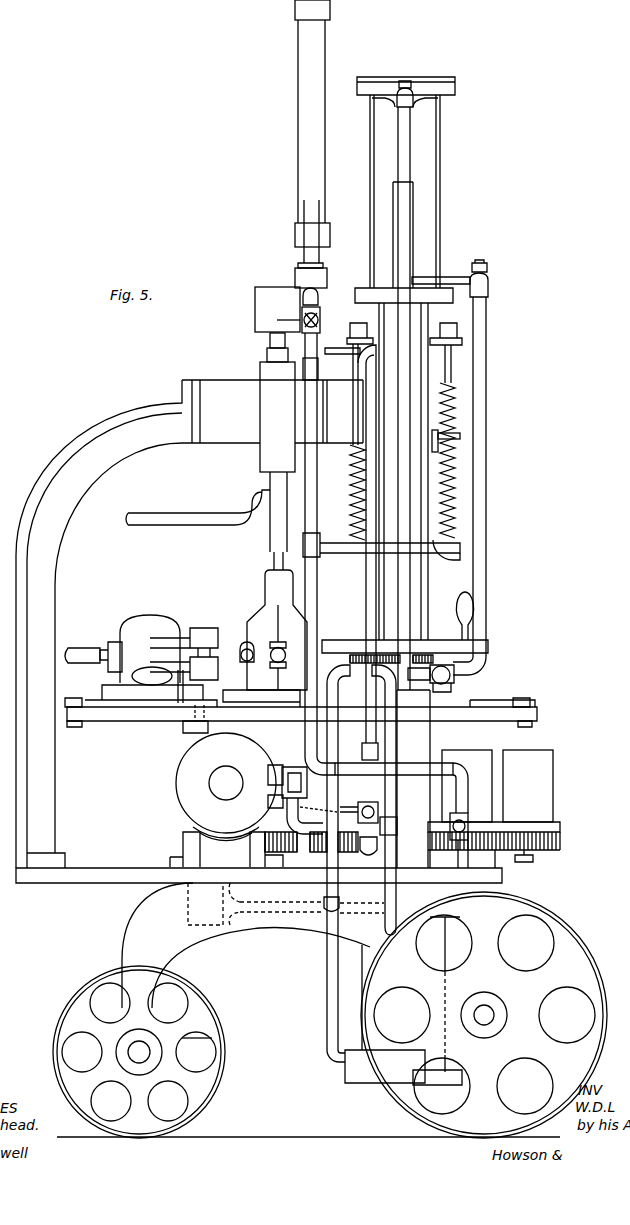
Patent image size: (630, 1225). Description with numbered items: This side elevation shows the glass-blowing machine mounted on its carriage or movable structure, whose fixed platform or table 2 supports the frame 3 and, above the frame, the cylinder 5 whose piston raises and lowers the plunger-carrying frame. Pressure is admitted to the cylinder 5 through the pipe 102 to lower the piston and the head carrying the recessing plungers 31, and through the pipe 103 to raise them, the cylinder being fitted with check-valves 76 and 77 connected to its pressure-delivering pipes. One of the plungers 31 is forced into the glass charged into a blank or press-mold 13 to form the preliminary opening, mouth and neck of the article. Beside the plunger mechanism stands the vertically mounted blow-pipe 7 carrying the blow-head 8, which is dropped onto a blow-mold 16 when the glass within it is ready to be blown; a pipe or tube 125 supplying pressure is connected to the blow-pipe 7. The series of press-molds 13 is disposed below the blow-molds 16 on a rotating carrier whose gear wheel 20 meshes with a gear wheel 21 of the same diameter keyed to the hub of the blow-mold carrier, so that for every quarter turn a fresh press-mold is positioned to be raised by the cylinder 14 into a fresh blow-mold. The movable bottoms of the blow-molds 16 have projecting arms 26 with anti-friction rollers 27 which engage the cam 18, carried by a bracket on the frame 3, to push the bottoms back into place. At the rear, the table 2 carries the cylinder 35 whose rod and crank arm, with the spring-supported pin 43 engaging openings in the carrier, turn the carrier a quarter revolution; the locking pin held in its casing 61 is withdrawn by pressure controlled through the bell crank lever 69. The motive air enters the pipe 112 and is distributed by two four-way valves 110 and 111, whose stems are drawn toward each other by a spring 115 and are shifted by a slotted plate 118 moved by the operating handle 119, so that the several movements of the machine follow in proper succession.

The fixed platform or table 2 is at (133, 878).
The frame 3 is at (189, 624).
The cylinder 5 is at (434, 213).
The blow-pipe 7 is at (277, 451).
The blow-head 8 is at (265, 638).
The blank or press molds 13 is at (497, 786).
The cylinder 14 is at (467, 1015).
The blow-molds 16 is at (163, 643).
The cam 18 is at (484, 722).
The gear wheel 20 is at (505, 845).
The gear wheel 21 is at (188, 836).
The projecting arms 26 is at (268, 706).
The anti-friction rollers 27 is at (301, 720).
The recessing plungers 31 is at (460, 440).
The cylinder 35 is at (229, 783).
The pin 43 is at (194, 718).
The casing 61 is at (361, 810).
The bell crank lever 69 is at (309, 800).
The check-valve 76 is at (398, 106).
The check-valve 77 is at (489, 268).
The pipe 102 is at (410, 158).
The pipe 103 is at (446, 277).
The four-way valve 110 is at (367, 664).
The four-way valve 111 is at (453, 683).
The pipe 112 is at (318, 300).
The spring 115 is at (405, 651).
The plate 118 is at (286, 656).
The operating handle 119 is at (468, 612).
The pipe or tube 125 is at (198, 507).